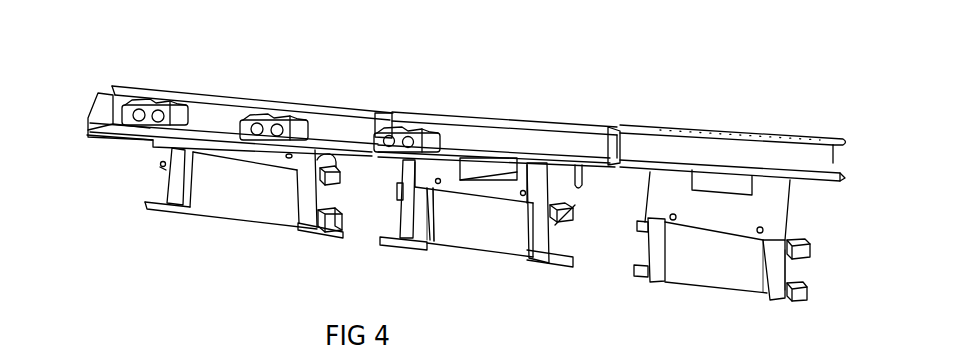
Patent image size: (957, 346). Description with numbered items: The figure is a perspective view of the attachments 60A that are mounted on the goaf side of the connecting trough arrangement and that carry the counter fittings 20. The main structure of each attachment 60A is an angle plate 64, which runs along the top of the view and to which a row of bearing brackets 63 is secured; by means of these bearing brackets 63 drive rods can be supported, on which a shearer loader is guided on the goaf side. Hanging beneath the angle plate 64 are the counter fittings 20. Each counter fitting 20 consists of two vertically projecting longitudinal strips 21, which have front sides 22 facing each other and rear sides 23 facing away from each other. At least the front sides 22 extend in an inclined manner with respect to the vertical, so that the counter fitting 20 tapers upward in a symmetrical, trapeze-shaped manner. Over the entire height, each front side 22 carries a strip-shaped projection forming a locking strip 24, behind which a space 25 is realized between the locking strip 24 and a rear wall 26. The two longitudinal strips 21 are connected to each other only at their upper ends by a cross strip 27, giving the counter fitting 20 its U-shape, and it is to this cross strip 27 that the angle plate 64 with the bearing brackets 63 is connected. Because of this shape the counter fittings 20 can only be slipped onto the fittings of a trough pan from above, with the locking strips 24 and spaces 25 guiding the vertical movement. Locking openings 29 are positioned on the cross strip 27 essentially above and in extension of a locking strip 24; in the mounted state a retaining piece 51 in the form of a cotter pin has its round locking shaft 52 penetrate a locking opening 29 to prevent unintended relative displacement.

The counter fitting 20 is at (476, 245).
The longitudinal strip 21 is at (418, 208).
The front side 22 is at (763, 258).
The rear side 23 is at (790, 268).
The locking strip 24 is at (440, 237).
The space 25 is at (438, 212).
The rear wall 26 is at (207, 193).
The cross strip 27 is at (248, 153).
The locking opening 29 is at (161, 163).
The retaining piece 51 is at (288, 158).
The locking shaft 52 is at (162, 169).
The attachment 60A is at (466, 104).
The bearing bracket 63 is at (426, 130).
The angle plate 64 is at (536, 140).